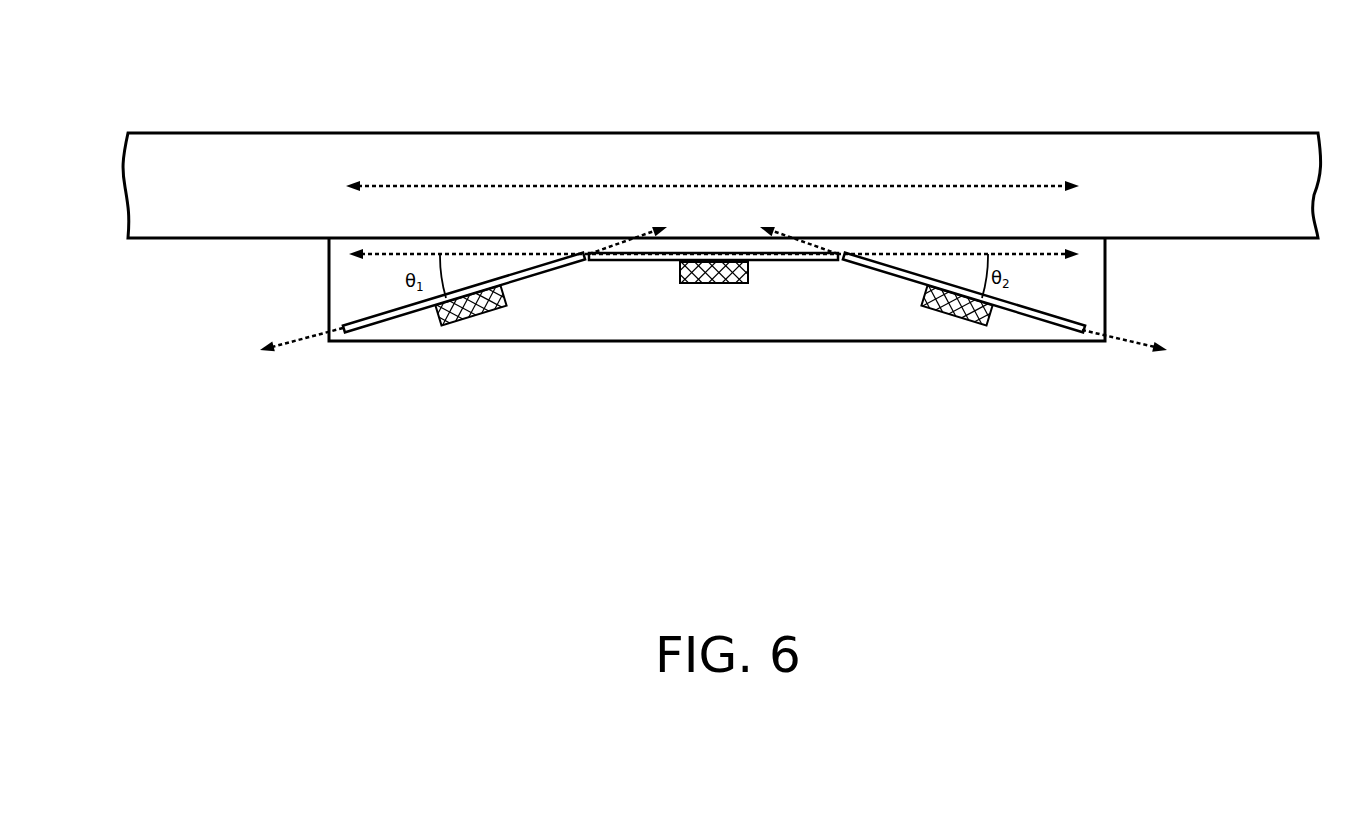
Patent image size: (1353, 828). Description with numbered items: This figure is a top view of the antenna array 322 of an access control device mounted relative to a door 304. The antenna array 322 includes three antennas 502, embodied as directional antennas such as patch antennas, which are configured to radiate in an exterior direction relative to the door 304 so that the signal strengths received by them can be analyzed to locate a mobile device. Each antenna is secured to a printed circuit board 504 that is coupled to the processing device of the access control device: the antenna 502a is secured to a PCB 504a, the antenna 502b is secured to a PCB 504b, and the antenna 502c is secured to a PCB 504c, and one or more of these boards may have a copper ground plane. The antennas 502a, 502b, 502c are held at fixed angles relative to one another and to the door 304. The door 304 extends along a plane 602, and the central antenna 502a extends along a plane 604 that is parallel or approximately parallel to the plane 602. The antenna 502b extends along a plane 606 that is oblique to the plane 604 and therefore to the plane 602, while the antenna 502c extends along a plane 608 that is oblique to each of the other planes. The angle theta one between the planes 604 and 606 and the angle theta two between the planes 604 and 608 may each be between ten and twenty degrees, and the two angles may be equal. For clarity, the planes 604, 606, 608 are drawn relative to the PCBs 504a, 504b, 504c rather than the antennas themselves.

The door 304 is at (1187, 133).
The antenna array 322 is at (680, 398).
The antennas 502 is at (719, 335).
The antenna 502a is at (713, 283).
The antenna 502b is at (470, 317).
The antenna 502c is at (955, 318).
The printed circuit board 504 is at (714, 321).
The PCB 504a is at (648, 262).
The PCB 504b is at (387, 322).
The PCB 504c is at (1050, 325).
The plane 602 is at (728, 185).
The plane 604 is at (492, 250).
The plane 606 is at (315, 332).
The plane 608 is at (1120, 335).